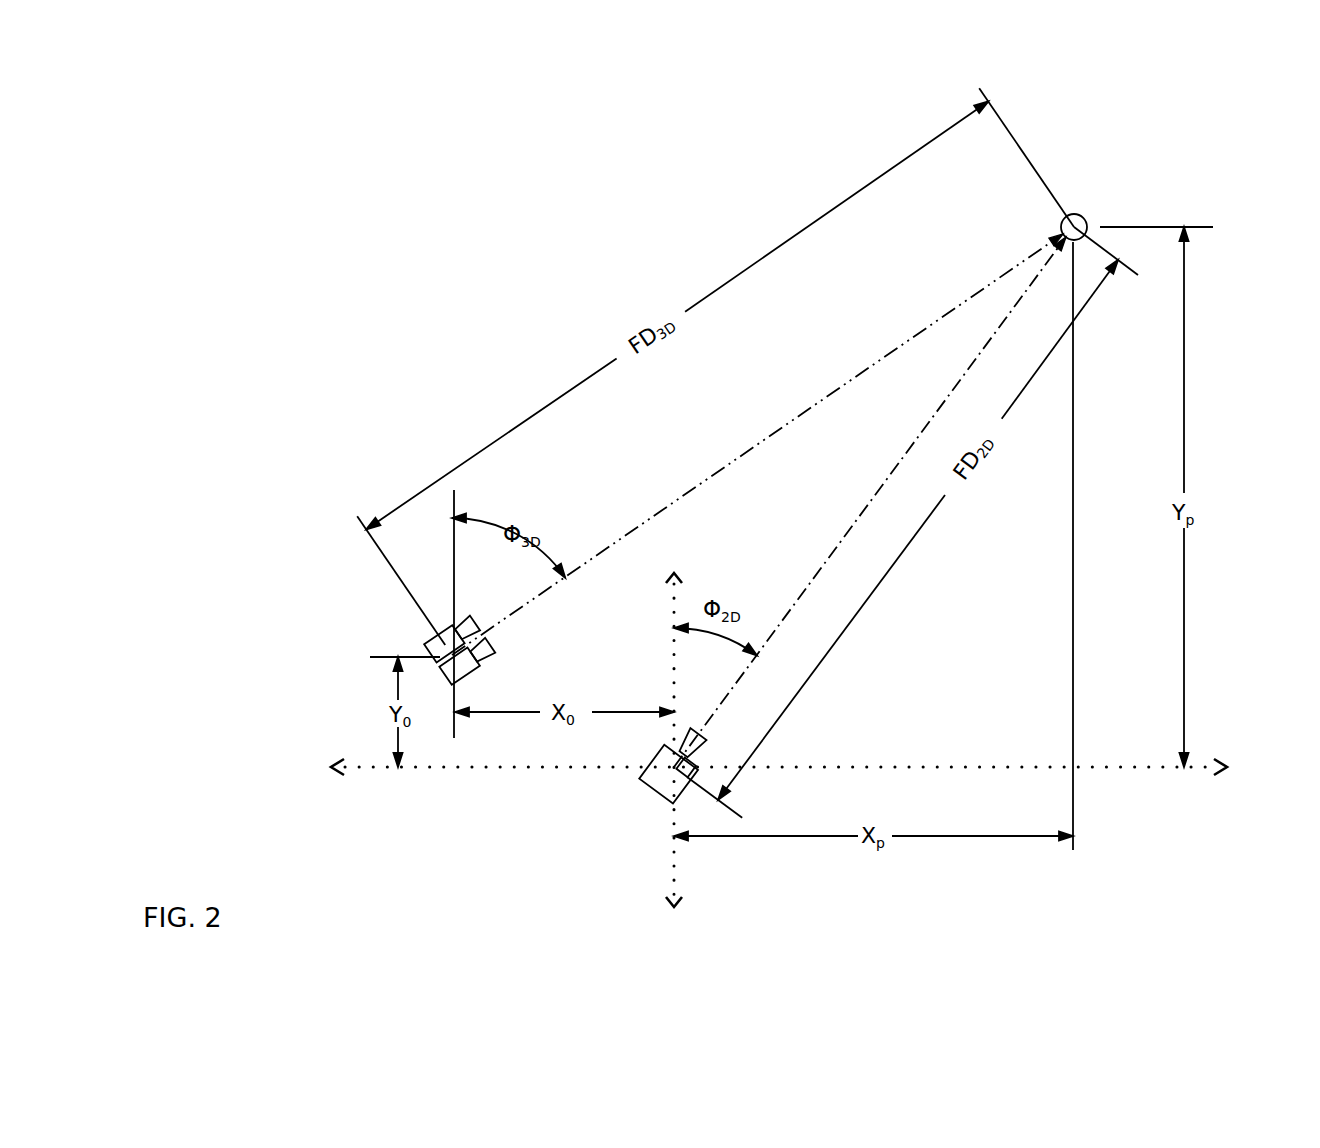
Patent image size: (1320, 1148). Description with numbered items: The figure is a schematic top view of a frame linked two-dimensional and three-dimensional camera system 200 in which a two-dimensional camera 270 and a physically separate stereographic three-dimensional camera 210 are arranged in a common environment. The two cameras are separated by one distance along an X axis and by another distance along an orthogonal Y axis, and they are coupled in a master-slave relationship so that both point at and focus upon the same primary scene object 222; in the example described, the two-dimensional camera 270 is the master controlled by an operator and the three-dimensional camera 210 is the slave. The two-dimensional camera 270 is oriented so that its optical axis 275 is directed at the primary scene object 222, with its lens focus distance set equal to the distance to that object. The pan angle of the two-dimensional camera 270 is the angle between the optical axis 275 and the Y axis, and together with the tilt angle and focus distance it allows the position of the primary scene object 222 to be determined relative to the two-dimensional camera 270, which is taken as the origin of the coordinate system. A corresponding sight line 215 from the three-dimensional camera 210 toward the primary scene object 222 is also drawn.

The frame linked 2D/3D camera system 200 is at (356, 802).
The 3D camera 210 is at (422, 644).
The 3D camera line of sight 215 is at (708, 483).
The primary scene object 222 is at (1085, 217).
The 2D camera 270 is at (655, 797).
The optical axis 275 is at (873, 498).